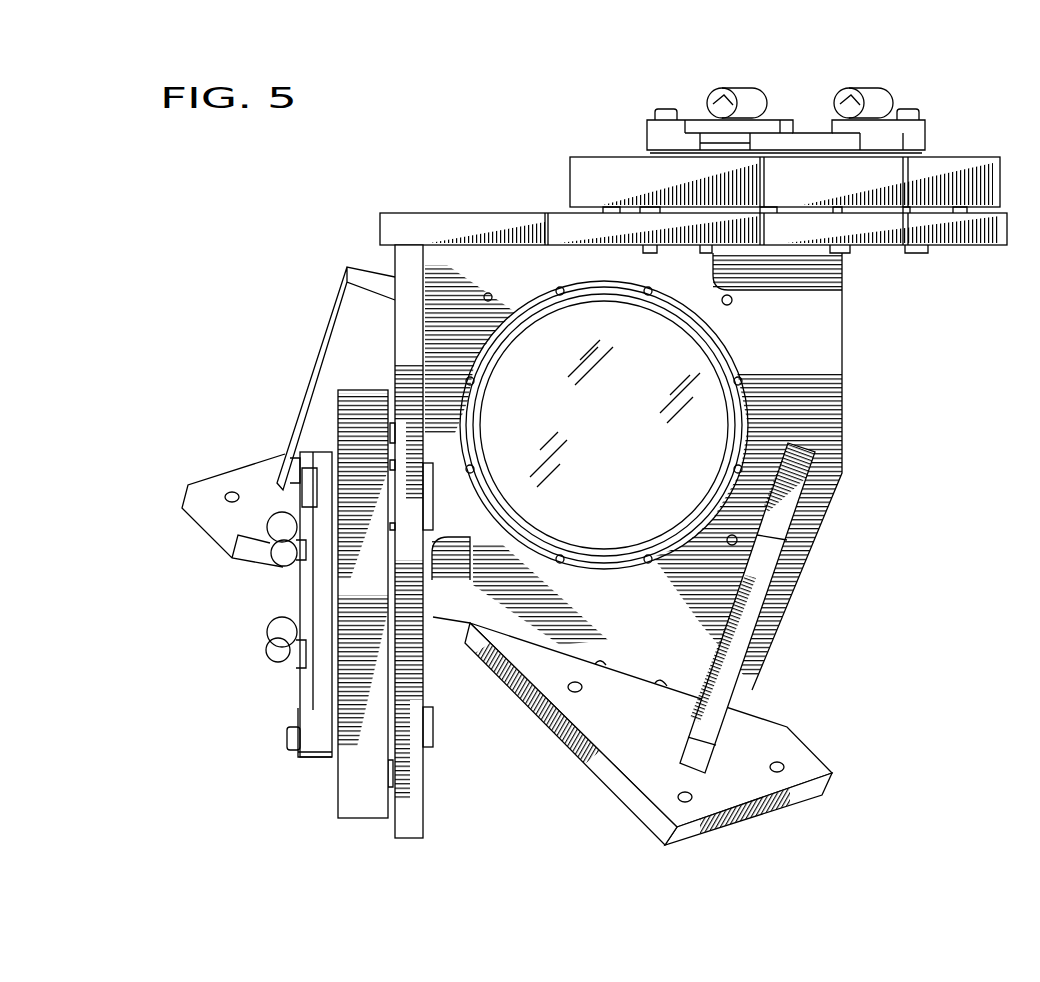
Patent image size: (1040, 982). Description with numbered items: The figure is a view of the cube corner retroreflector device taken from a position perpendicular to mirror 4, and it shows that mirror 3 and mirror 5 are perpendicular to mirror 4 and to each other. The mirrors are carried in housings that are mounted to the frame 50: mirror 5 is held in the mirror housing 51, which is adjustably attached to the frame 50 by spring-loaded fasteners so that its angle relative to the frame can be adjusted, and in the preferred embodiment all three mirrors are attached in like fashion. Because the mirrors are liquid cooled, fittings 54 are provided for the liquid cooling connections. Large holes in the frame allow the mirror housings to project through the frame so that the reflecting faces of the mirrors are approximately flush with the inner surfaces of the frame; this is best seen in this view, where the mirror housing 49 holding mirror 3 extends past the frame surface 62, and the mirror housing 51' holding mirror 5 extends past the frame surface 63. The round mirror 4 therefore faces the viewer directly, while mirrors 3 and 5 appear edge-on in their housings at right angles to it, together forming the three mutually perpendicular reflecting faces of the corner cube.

The mirror housing 49 is at (988, 163).
The frame surface 62 is at (995, 237).
The fittings 54 is at (886, 97).
The frame 50 is at (820, 356).
The mirror 3 is at (857, 292).
The mirror 4 is at (671, 494).
The mirror 5 is at (458, 667).
The frame surface 63 is at (425, 808).
The mirror housing 51' is at (460, 605).
The mirror housing 51 is at (361, 641).